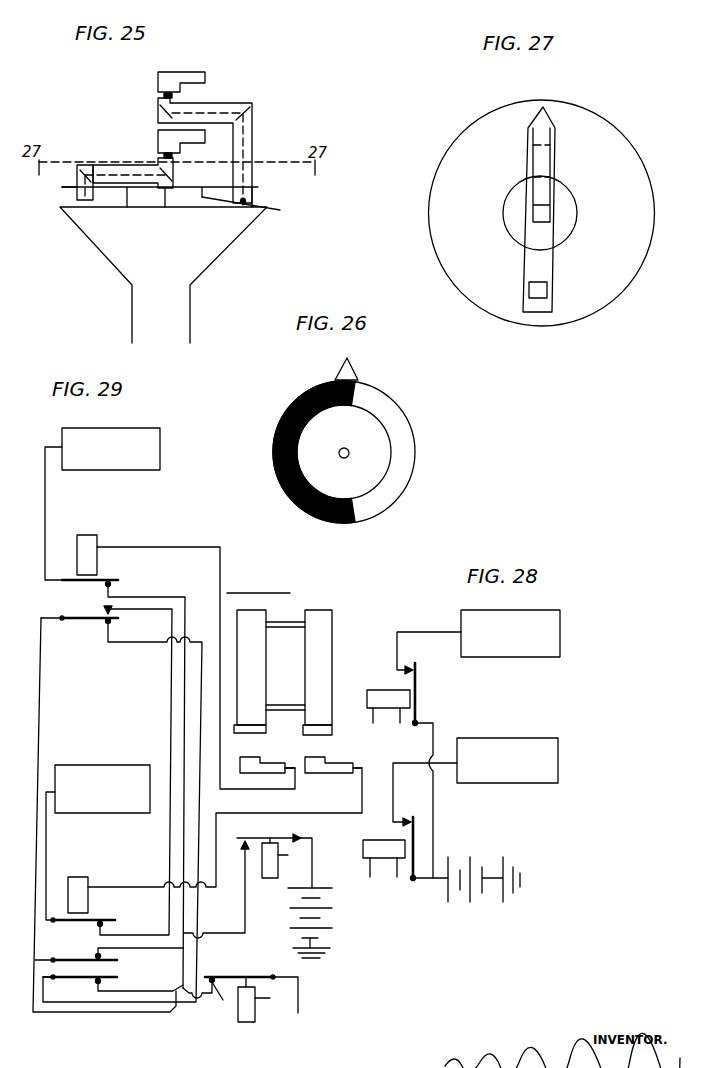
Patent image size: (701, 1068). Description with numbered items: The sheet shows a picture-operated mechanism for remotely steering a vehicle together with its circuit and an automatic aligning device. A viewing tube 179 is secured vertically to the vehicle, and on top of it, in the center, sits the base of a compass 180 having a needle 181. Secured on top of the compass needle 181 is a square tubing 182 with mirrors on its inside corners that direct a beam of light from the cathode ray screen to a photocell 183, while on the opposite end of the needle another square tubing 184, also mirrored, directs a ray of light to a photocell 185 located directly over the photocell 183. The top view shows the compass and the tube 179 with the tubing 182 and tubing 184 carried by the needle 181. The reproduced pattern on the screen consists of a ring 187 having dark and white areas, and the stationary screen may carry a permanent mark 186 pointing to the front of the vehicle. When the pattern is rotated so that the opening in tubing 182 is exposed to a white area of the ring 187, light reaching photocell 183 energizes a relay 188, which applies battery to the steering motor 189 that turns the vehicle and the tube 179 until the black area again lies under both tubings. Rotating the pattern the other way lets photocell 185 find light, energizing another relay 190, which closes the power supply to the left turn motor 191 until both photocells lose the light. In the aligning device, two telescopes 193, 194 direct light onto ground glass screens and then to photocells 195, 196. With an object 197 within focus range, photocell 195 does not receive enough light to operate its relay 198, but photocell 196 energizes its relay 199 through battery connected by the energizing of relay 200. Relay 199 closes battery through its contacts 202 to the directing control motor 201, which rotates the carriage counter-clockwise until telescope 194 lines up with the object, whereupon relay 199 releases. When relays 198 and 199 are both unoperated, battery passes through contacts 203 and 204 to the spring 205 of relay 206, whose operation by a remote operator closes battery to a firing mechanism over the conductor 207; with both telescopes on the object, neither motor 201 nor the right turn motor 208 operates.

In FIG. 25, the viewing tube 179 is at (213, 246).
In FIG. 25, the compass 180 is at (186, 202).
In FIG. 25, the compass needle 181 is at (66, 187).
In FIG. 27, the compass needle 181 is at (545, 110).
In FIG. 25, the square tubing 182 is at (135, 165).
In FIG. 27, the square tubing 182 is at (563, 182).
In FIG. 25, the photocell 183 is at (203, 139).
In FIG. 25, the square tubing 184 is at (218, 103).
In FIG. 27, the square tubing 184 is at (548, 290).
In FIG. 25, the photocell 185 is at (185, 72).
In FIG. 26, the permanent mark 186 is at (358, 369).
In FIG. 26, the reproduced ring 187 is at (278, 482).
In FIG. 28, the relay 188 is at (395, 690).
In FIG. 28, the steering motor 189 is at (563, 634).
In FIG. 28, the relay 190 is at (380, 860).
In FIG. 28, the left turn motor 191 is at (560, 770).
In FIG. 29, the telescope 193 is at (267, 683).
In FIG. 29, the telescope 194 is at (333, 681).
In FIG. 29, the photocell 195 is at (261, 763).
In FIG. 29, the photocell 196 is at (330, 764).
In FIG. 29, the object 197 is at (257, 593).
In FIG. 29, the relay 198 is at (100, 539).
In FIG. 29, the relay 199 is at (92, 880).
In FIG. 29, the relay 200 is at (272, 878).
In FIG. 29, the directing control motor 201 is at (162, 448).
In FIG. 29, the contacts 202 is at (117, 958).
In FIG. 29, the contacts 203 is at (103, 623).
In FIG. 29, the contacts 204 is at (118, 978).
In FIG. 29, the spring 205 is at (223, 1000).
In FIG. 29, the relay 206 is at (238, 1007).
In FIG. 29, the conductor 207 is at (297, 1012).
In FIG. 29, the direction control motor 208 is at (115, 765).